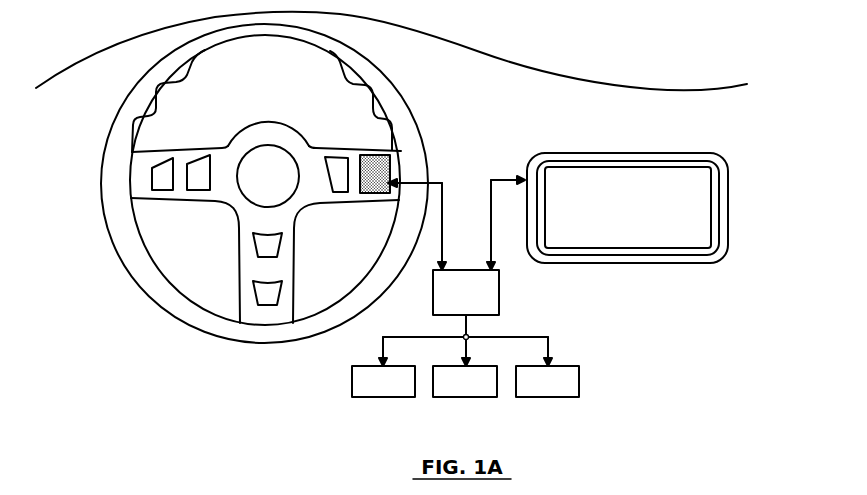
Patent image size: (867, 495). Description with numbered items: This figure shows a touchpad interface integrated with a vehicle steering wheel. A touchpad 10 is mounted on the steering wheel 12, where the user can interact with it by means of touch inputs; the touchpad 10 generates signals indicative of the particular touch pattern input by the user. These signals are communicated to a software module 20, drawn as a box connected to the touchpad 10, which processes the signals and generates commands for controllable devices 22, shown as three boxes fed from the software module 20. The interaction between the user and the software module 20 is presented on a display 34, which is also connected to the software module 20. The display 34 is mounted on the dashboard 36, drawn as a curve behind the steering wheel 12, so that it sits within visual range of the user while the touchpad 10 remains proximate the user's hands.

The touchpad 10 is at (390, 157).
The steering wheel 12 is at (106, 190).
The software module 20 is at (490, 285).
The controllable devices 22 is at (405, 392).
The display 34 is at (675, 232).
The dashboard 36 is at (497, 92).